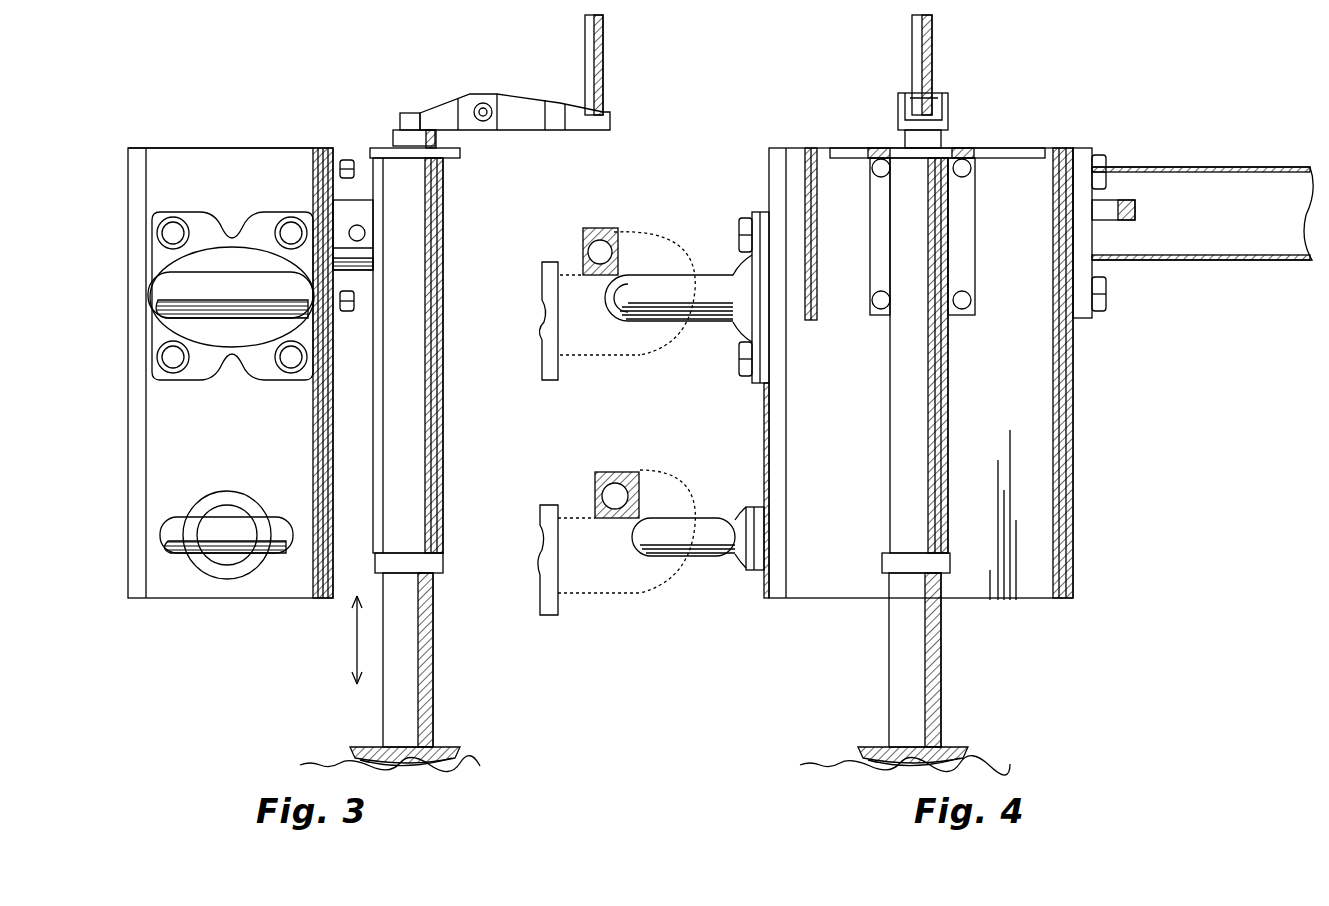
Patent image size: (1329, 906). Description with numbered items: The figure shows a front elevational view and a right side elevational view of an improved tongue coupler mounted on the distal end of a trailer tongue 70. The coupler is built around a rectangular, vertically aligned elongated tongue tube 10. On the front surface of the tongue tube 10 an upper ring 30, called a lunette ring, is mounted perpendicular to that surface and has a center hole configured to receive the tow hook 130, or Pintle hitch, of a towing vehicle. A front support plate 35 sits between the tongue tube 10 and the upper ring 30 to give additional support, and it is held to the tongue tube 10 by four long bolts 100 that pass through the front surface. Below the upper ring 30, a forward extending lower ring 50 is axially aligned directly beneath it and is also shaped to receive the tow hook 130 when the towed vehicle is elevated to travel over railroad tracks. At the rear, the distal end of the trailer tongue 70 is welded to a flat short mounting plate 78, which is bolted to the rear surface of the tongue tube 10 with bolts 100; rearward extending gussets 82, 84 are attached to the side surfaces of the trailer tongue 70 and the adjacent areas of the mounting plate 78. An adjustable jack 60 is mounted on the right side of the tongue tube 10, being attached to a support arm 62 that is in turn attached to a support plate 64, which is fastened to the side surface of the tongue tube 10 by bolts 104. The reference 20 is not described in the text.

In FIG. 3, the tongue tube 10 is at (183, 150).
In FIG. 4, the tongue tube 10 is at (830, 150).
In FIG. 4, the support rod 20 is at (590, 252).
In FIG. 3, the upper ring 30 is at (152, 290).
In FIG. 4, the upper ring 30 is at (660, 272).
In FIG. 3, the front support plate 35 is at (165, 222).
In FIG. 4, the front support plate 35 is at (758, 212).
In FIG. 3, the lower ring 50 is at (160, 532).
In FIG. 4, the lower ring 50 is at (672, 515).
In FIG. 3, the adjustable jack 60 is at (530, 78).
In FIG. 4, the adjustable jack 60 is at (882, 376).
In FIG. 3, the support arm 62 is at (375, 256).
In FIG. 3, the support plate 64 is at (345, 162).
In FIG. 4, the support plate 64 is at (874, 244).
In FIG. 4, the trailer tongue 70 is at (1238, 160).
In FIG. 4, the mounting plate 78 is at (1085, 150).
In FIG. 4, the gusset 82 is at (1137, 212).
In FIG. 4, the gusset 84 is at (760, 500).
In FIG. 3, the long bolts 100 is at (163, 224).
In FIG. 4, the long bolts 100 is at (739, 230).
In FIG. 4, the bolts 104 is at (968, 148).
In FIG. 4, the tow hook 130 is at (526, 345).